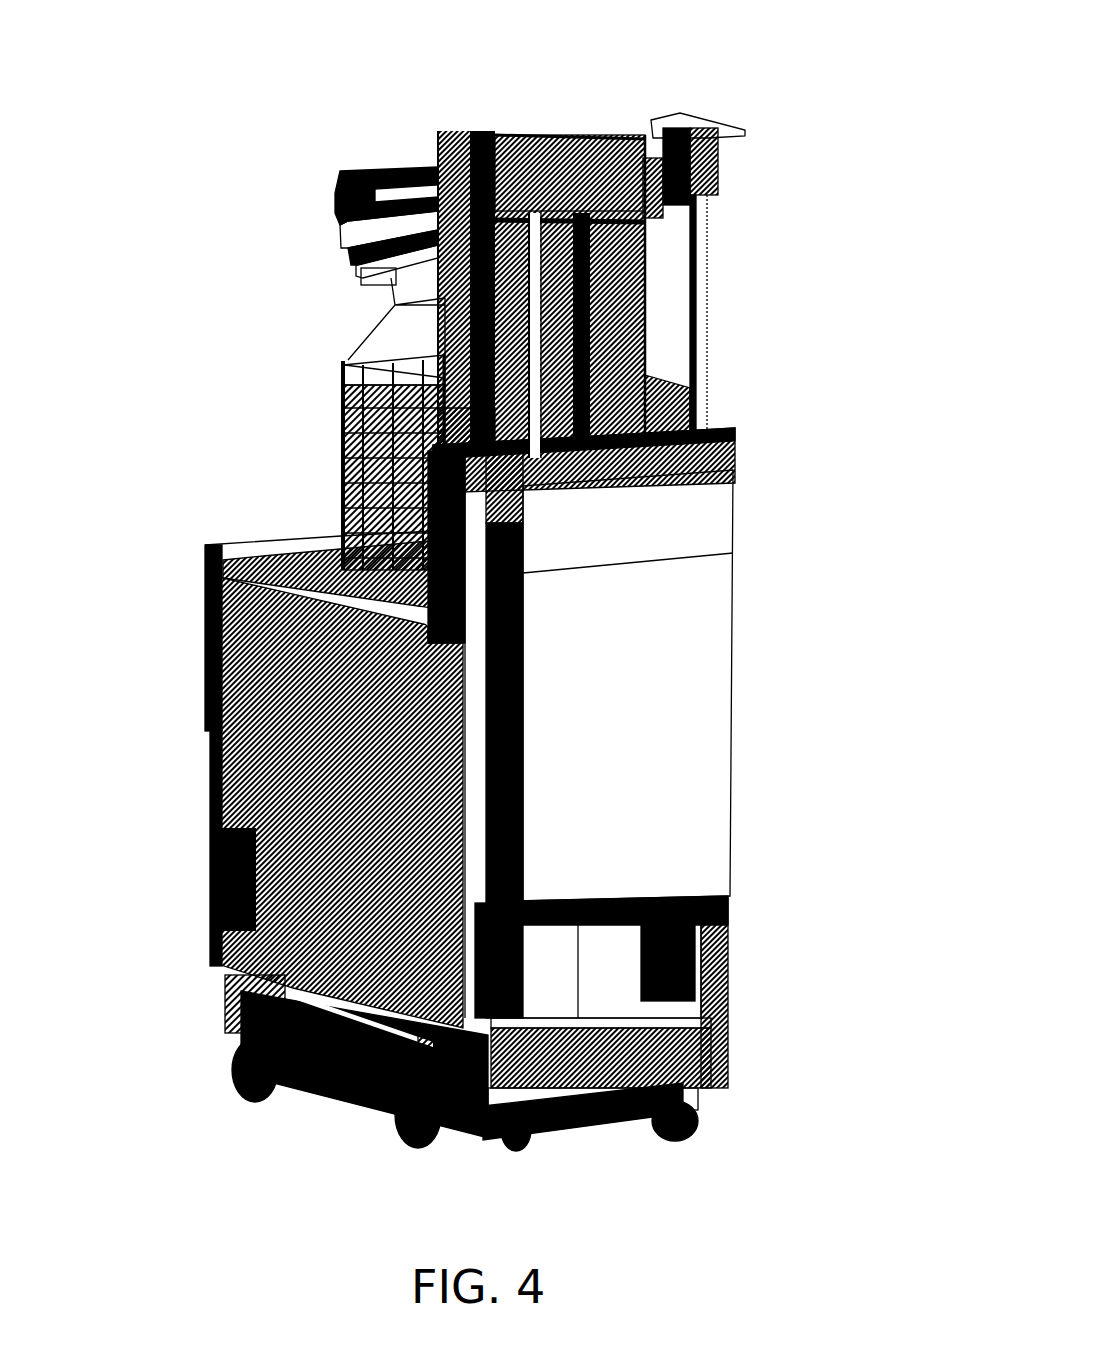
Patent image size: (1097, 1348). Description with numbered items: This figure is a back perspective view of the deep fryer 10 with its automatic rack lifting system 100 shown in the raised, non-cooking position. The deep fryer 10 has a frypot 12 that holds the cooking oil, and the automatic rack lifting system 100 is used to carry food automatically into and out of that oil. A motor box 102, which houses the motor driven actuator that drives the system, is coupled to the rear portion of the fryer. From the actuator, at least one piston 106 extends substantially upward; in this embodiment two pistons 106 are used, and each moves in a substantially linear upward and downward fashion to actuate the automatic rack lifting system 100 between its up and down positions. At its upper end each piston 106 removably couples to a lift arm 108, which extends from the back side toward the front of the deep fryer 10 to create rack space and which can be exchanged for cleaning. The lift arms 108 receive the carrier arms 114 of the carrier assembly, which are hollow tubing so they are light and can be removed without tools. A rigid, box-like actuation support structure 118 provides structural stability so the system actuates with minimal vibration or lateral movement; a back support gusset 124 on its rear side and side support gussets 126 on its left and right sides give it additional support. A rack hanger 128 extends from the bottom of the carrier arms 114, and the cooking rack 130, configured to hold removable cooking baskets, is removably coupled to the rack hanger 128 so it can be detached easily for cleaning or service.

The deep fryer 10 is at (290, 146).
The frypot 12 is at (408, 595).
The automatic rack lifting system 100 is at (692, 68).
The motor box 102 is at (720, 800).
The piston 106 is at (527, 323).
The lift arm 108 is at (345, 167).
The carrier arm 114 is at (345, 253).
The actuation support structure 118 is at (580, 157).
The back support gusset 124 is at (590, 407).
The side support gusset 126 is at (443, 428).
The rack hanger 128 is at (352, 260).
The cooking rack 130 is at (335, 408).